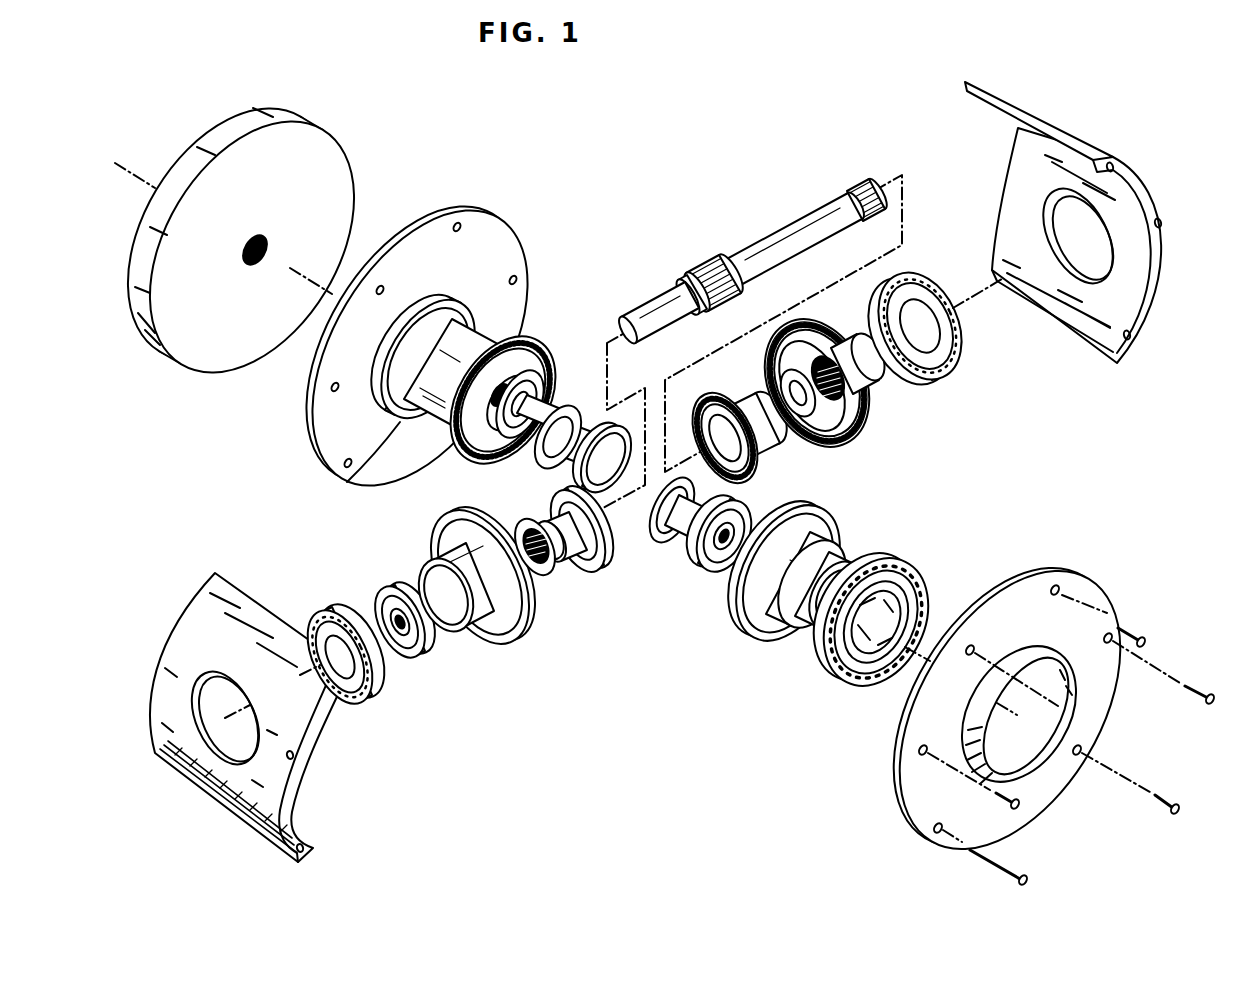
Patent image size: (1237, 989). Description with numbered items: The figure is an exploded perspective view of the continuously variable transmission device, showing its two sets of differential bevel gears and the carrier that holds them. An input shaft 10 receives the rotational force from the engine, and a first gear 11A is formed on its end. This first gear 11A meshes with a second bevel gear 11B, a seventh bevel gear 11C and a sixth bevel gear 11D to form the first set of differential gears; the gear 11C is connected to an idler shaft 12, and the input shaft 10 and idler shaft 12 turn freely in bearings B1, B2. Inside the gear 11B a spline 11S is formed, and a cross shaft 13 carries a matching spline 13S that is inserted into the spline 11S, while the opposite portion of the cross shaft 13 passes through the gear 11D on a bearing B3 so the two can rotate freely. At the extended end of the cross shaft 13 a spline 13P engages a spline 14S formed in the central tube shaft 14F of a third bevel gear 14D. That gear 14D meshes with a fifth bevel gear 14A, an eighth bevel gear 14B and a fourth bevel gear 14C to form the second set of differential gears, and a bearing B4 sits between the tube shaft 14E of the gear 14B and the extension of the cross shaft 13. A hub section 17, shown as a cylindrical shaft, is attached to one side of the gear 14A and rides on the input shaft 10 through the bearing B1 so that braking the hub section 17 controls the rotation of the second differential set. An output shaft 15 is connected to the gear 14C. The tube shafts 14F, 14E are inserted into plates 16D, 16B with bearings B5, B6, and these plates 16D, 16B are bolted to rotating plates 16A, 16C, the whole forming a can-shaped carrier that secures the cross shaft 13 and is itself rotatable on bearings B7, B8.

The input shaft 10 is at (545, 430).
The first gear 11A is at (598, 505).
The second bevel gear 11B is at (590, 570).
The seventh bevel gear 11C is at (662, 540).
The sixth bevel gear 11D is at (747, 472).
The spline 11S is at (543, 563).
The idler shaft 12 is at (685, 523).
The cross shaft 13 is at (772, 232).
The spline 13S is at (700, 262).
The spline 13P is at (857, 182).
The fifth bevel gear 14A is at (535, 338).
The eighth bevel gear 14B is at (533, 630).
The fourth bevel gear 14C is at (740, 617).
The third bevel gear 14D is at (870, 403).
The tube shaft 14E is at (452, 637).
The central tube shaft 14F is at (893, 377).
The spline 14S is at (827, 330).
The output shaft 15 is at (810, 613).
The rotating plate 16A is at (440, 233).
The plate 16B is at (202, 613).
The rotating plate 16C is at (1110, 605).
The plate 16D is at (1143, 313).
The hub section 17 is at (347, 482).
The bearing B1 is at (528, 475).
The bearing B2 is at (712, 560).
The bearing B3 is at (863, 437).
The bearing B4 is at (410, 653).
The bearing B5 is at (960, 353).
The bearing B6 is at (343, 707).
The bearing B7 is at (378, 383).
The bearing B8 is at (838, 683).